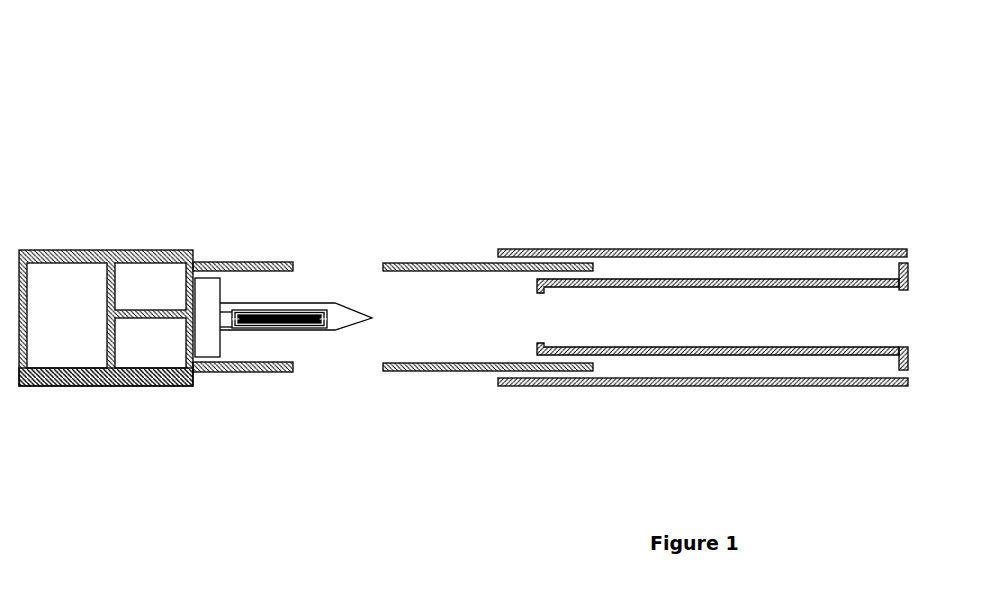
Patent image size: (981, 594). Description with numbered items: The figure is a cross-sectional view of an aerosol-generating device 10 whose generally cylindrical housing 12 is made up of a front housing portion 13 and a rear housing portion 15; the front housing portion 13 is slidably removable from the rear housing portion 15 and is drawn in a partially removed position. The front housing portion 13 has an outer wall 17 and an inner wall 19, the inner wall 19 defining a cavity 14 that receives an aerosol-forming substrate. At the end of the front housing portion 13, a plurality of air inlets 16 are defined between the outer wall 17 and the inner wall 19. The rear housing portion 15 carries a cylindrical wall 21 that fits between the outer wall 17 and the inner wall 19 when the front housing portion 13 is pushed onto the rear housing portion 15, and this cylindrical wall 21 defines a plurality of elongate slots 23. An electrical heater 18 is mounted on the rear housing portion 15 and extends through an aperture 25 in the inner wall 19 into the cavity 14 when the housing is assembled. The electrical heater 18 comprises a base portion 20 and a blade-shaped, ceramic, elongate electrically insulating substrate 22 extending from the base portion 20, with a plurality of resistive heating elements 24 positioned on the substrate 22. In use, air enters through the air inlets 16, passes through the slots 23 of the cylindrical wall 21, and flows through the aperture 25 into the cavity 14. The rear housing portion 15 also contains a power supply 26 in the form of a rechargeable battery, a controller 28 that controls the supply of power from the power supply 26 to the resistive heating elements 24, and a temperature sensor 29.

The aerosol-generating device 10 is at (655, 320).
The housing 12 is at (60, 250).
The front housing portion 13 is at (827, 250).
The cavity 14 is at (676, 330).
The rear housing portion 15 is at (68, 387).
The air inlets 16 is at (908, 258).
The outer wall 17 is at (577, 248).
The electrical heater 18 is at (263, 303).
The inner wall 19 is at (837, 353).
The base portion 20 is at (204, 278).
The cylindrical wall 21 is at (408, 262).
The elongate electrically insulating substrate 22 is at (335, 315).
The elongate slots 23 is at (333, 367).
The resistive heating elements 24 is at (273, 325).
The aperture 25 is at (538, 315).
The power supply 26 is at (67, 315).
The controller 28 is at (150, 286).
The temperature sensor 29 is at (150, 343).